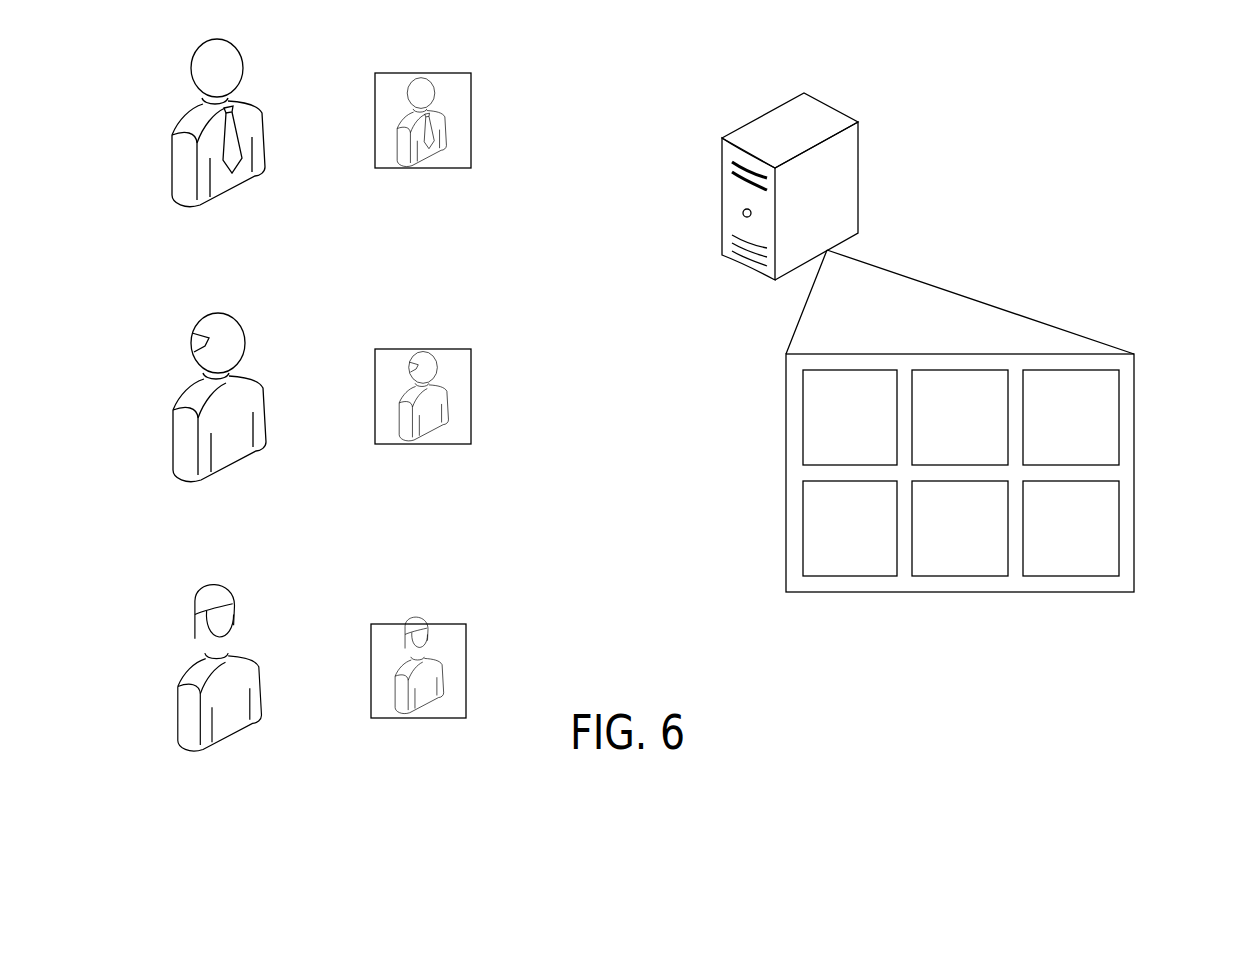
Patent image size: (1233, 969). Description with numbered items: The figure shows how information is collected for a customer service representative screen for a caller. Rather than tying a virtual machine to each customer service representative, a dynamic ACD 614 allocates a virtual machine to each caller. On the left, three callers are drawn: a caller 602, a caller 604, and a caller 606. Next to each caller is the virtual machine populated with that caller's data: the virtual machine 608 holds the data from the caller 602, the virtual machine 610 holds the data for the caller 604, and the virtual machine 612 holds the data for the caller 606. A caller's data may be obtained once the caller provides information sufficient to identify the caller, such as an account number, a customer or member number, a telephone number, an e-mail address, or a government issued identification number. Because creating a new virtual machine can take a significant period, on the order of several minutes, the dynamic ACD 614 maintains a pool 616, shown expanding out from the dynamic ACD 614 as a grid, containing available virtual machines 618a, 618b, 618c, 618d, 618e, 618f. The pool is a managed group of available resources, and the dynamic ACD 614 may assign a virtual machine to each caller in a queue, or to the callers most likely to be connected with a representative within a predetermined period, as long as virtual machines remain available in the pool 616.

The caller 602 is at (275, 80).
The caller 604 is at (275, 349).
The caller 606 is at (261, 634).
The virtual machine 608 is at (472, 93).
The virtual machine 610 is at (400, 350).
The virtual machine 612 is at (468, 702).
The dynamic ACD 614 is at (860, 167).
The pool 616 is at (996, 471).
The virtual machine 618a is at (850, 417).
The virtual machine 618b is at (960, 417).
The virtual machine 618c is at (1071, 417).
The virtual machine 618d is at (850, 528).
The virtual machine 618e is at (960, 528).
The virtual machine 618f is at (1071, 528).